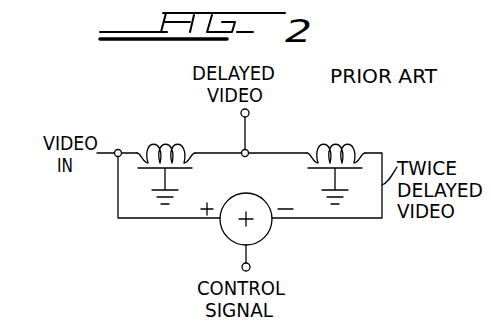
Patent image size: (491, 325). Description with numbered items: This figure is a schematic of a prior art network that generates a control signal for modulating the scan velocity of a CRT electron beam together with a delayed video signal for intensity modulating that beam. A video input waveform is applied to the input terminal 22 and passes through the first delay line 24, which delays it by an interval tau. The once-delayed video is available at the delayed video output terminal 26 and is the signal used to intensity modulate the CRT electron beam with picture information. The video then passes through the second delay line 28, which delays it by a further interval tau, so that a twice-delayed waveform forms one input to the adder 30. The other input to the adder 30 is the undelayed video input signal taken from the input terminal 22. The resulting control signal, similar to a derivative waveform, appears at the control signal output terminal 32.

The input terminal 22 is at (121, 150).
The first delay line 24 is at (170, 146).
The delayed video output terminal 26 is at (249, 114).
The second delay line 28 is at (327, 146).
The adder 30 is at (226, 238).
The control signal output terminal 32 is at (250, 265).